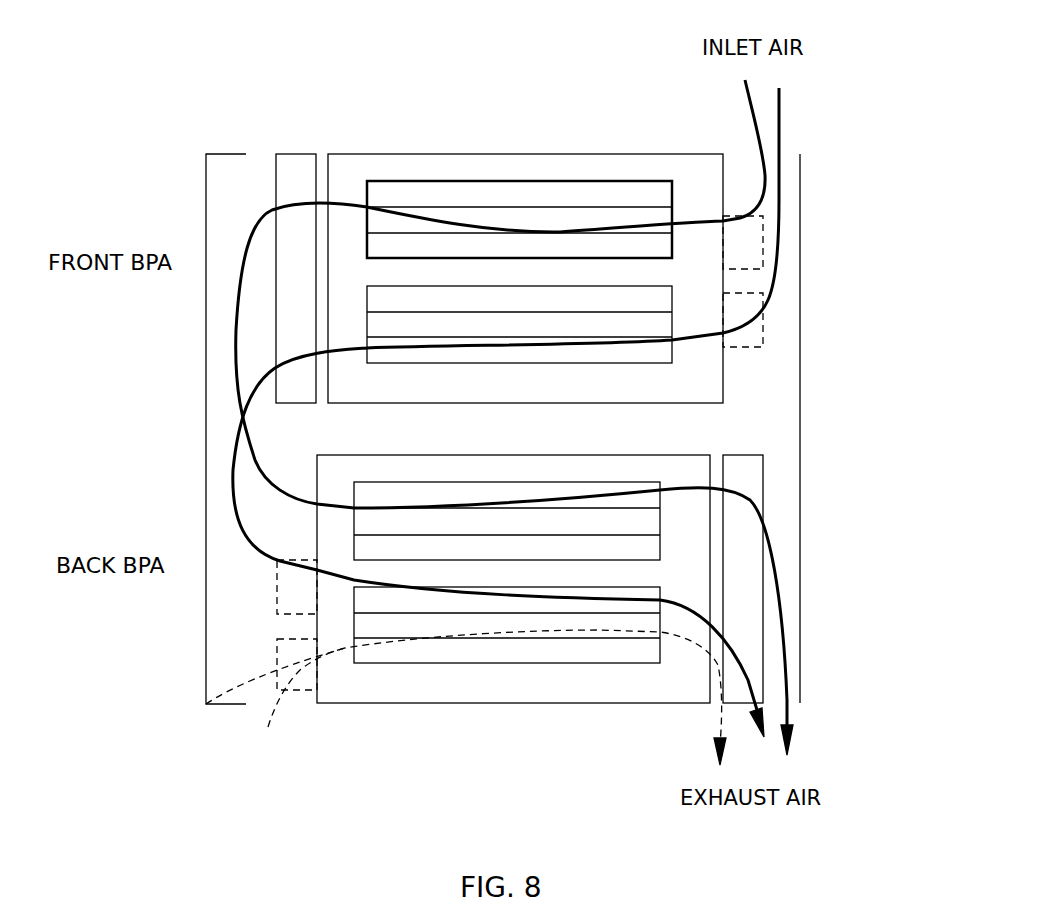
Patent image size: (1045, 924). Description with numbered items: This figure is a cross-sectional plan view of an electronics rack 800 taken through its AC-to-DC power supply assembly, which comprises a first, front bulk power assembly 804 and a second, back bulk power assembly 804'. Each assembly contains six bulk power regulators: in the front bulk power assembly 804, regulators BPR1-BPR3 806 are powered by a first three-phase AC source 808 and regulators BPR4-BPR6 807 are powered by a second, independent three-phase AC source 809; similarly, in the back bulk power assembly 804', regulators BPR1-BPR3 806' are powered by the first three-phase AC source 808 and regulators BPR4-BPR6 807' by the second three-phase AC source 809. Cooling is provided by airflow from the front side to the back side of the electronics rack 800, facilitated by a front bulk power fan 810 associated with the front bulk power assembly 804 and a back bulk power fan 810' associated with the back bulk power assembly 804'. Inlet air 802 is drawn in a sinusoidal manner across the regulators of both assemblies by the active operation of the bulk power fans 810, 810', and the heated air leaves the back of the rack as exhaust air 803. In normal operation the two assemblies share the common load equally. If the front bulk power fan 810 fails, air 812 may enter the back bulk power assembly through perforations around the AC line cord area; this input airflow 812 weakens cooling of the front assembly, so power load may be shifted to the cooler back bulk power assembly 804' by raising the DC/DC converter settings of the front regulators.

The electronics rack 800 is at (206, 154).
The inlet air 802 is at (757, 117).
The exhaust air 803 is at (765, 718).
The front bulk power assembly 804 is at (525, 298).
The back bulk power assembly 804' is at (513, 558).
The regulators BPR1-BPR3 806 is at (519, 183).
The regulators BPR1-BPR3 806' is at (507, 490).
The regulators BPR4-BPR6 807 is at (526, 341).
The regulators BPR4-BPR6 807' is at (507, 672).
The first three-phase AC source 808 is at (763, 233).
The second three-phase AC source 809 is at (763, 323).
The front bulk power fan 810 is at (298, 237).
The back bulk power fan 810' is at (806, 579).
The input airflow 812 is at (250, 677).